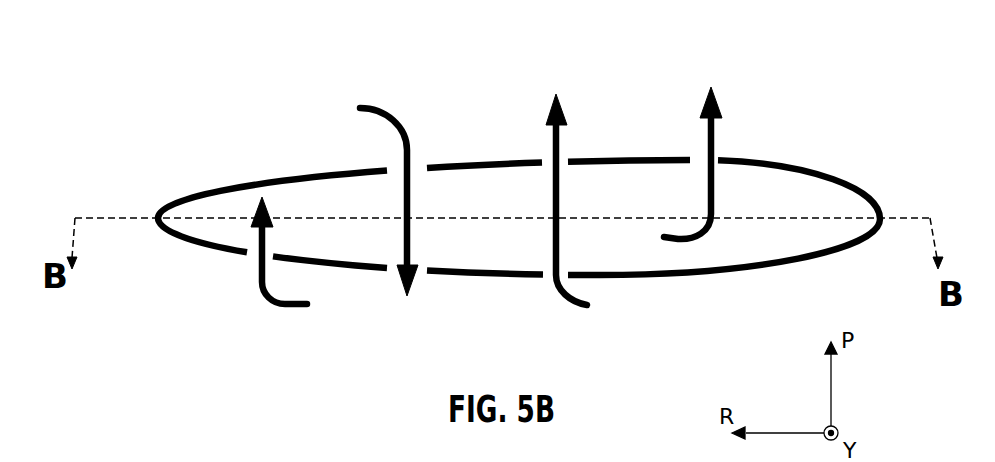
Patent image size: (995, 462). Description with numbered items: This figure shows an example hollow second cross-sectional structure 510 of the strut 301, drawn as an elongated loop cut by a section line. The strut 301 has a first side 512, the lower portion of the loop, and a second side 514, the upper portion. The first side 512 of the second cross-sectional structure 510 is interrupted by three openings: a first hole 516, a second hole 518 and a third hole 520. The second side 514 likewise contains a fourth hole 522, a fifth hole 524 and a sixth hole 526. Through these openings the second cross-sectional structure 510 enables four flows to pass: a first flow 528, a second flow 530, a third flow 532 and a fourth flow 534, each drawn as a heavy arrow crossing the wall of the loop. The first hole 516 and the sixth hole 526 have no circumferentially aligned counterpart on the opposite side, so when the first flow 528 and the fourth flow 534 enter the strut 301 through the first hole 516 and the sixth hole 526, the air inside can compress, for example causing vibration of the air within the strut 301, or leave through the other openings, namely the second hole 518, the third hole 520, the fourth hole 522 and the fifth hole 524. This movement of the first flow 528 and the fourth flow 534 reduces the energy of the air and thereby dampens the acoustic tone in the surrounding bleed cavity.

The second cross-sectional structure 510 is at (189, 53).
The strut 301 is at (213, 107).
The first side 512 is at (187, 245).
The second side 514 is at (187, 198).
The first hole 516 is at (245, 258).
The second hole 518 is at (387, 280).
The third hole 520 is at (542, 280).
The fourth hole 522 is at (427, 162).
The fifth hole 524 is at (568, 158).
The sixth hole 526 is at (720, 154).
The first flow 528 is at (288, 310).
The second flow 530 is at (388, 108).
The third flow 532 is at (577, 310).
The fourth flow 534 is at (713, 92).